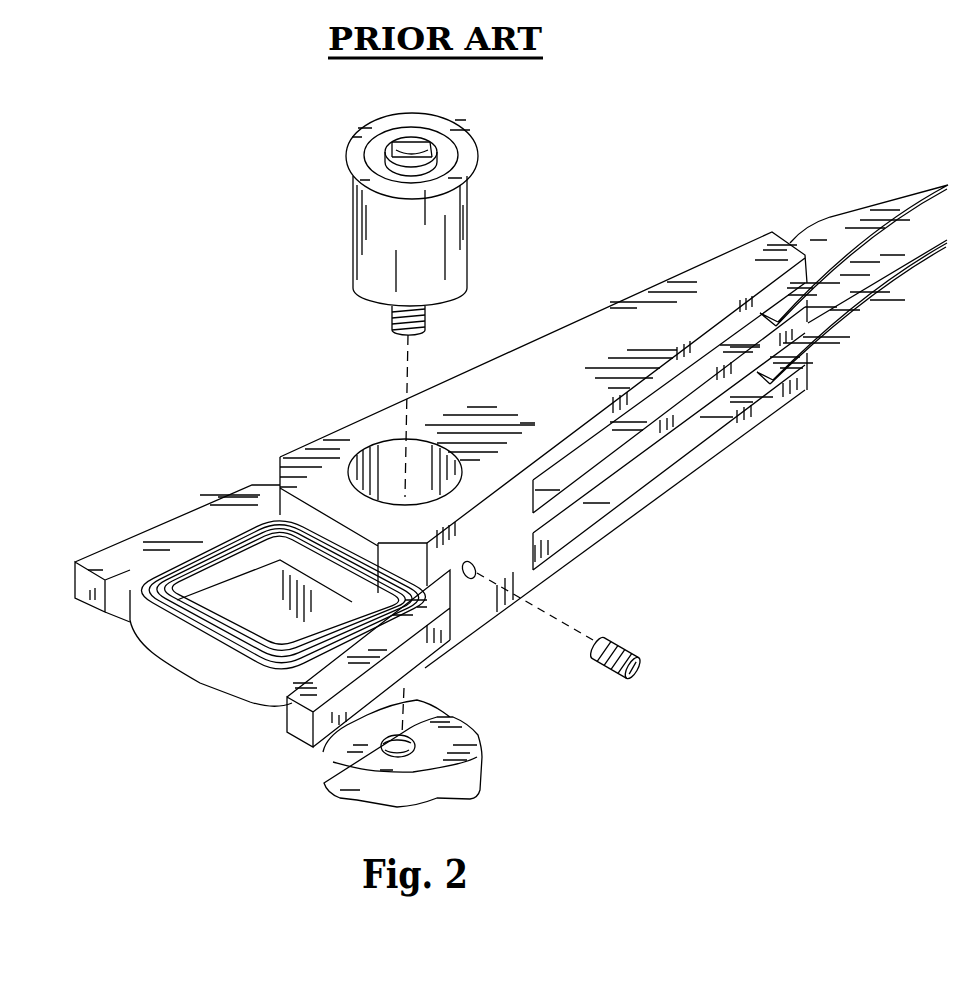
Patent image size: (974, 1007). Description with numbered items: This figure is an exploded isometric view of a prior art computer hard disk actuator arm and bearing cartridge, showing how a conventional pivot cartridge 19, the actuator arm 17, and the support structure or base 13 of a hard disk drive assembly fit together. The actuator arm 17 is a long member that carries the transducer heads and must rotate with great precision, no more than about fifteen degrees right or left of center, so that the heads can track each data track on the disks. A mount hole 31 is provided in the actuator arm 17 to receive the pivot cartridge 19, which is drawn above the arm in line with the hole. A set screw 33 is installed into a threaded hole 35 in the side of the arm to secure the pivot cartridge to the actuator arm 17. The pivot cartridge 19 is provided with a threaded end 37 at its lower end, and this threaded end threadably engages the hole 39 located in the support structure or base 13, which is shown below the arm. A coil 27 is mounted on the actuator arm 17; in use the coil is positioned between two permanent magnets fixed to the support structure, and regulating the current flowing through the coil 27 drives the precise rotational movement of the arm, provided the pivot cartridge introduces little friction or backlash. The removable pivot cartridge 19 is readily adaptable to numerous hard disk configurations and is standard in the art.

The support structure or base 13 is at (415, 772).
The actuator arm 17 is at (511, 463).
The pivot cartridge 19 is at (400, 147).
The coil 27 is at (210, 670).
The mount hole 31 is at (373, 460).
The set screw 33 is at (626, 641).
The threaded hole 35 is at (477, 560).
The threaded end 37 is at (393, 321).
The hole 39 is at (450, 713).